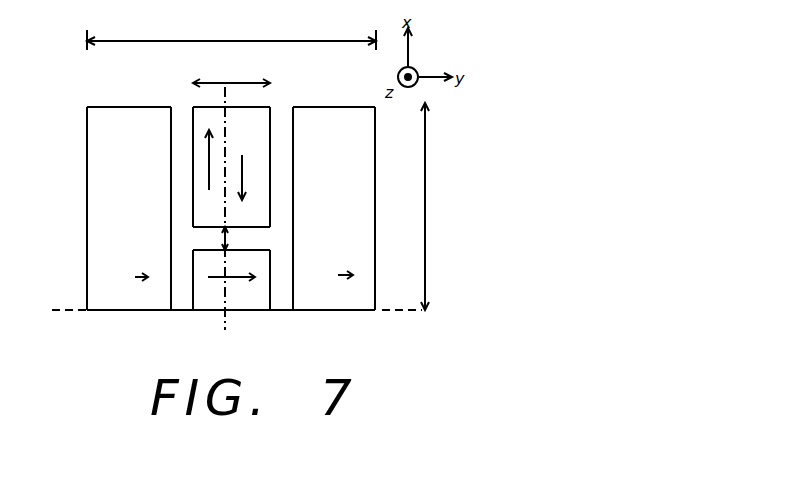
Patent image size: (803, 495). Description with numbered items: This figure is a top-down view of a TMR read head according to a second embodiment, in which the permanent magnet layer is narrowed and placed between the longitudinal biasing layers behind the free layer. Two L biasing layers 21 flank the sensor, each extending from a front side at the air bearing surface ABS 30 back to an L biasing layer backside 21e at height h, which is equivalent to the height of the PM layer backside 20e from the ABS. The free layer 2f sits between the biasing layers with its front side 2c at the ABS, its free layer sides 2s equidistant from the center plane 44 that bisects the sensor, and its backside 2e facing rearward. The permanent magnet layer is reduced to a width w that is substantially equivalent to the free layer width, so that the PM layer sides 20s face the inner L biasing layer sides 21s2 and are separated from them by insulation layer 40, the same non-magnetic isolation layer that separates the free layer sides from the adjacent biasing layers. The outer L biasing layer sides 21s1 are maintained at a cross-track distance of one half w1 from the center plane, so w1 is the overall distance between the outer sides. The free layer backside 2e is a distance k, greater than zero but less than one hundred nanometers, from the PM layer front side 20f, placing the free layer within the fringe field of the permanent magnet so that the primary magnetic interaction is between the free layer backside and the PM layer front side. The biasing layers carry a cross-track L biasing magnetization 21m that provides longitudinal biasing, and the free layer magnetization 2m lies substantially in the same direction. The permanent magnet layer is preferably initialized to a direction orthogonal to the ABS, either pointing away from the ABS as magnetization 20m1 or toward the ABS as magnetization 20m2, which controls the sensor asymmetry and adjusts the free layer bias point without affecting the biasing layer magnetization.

The longitudinal biasing layers 21 is at (98, 195).
The L biasing layer backside 21e is at (110, 107).
The outer L biasing layer sides 21s1 is at (87, 163).
The inner L biasing layer sides 21s2 is at (171, 285).
The L biasing magnetization 21m is at (225, 271).
The PM layer backside 20e is at (205, 107).
The PM layer sides 20s is at (192, 205).
The PM layer front side 20f is at (202, 228).
The PM layer magnetization direction pointing away from ABS 20m1 is at (223, 154).
The PM layer magnetization direction pointing toward ABS 20m2 is at (239, 190).
The insulation layer 40 is at (277, 133).
The free layer backside 2e is at (265, 250).
The free layer sides 2s is at (193, 288).
The free layer 2f is at (210, 298).
The free layer front side 2c is at (243, 311).
The free layer magnetization 2m is at (233, 267).
The ABS 30 is at (244, 314).
The center plane 44 is at (227, 205).
The distance between outer L biasing layer sides w1 is at (231, 32).
The PM layer width w is at (231, 76).
The height h is at (431, 206).
The distance k is at (235, 240).